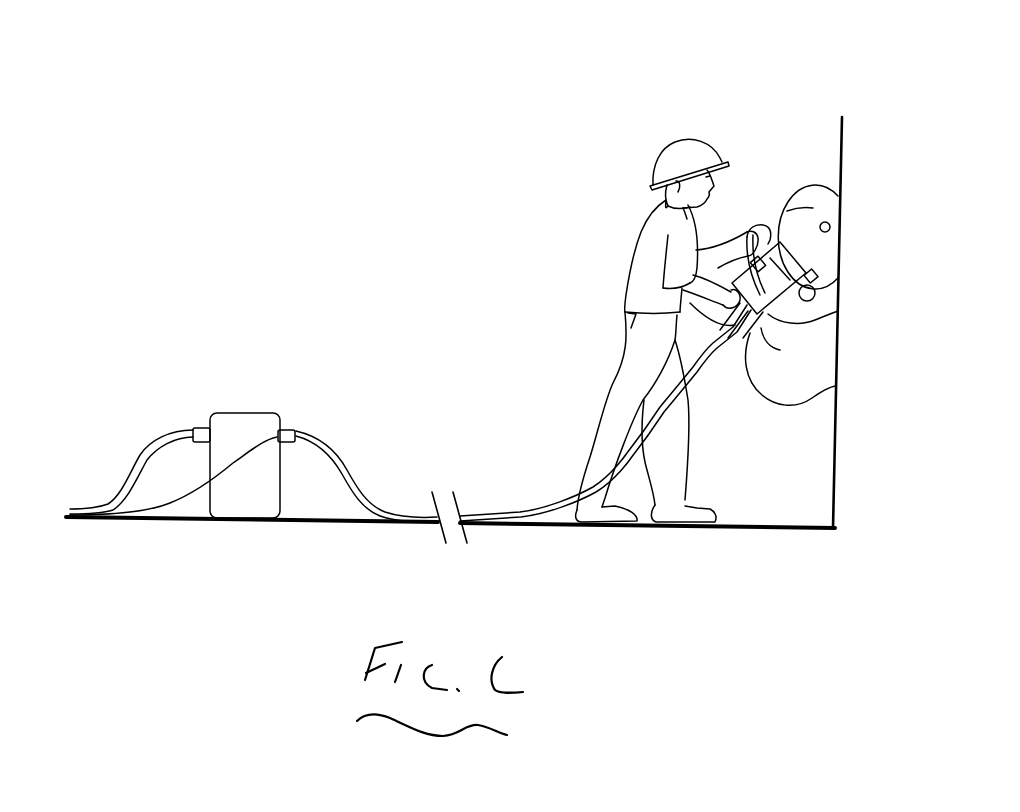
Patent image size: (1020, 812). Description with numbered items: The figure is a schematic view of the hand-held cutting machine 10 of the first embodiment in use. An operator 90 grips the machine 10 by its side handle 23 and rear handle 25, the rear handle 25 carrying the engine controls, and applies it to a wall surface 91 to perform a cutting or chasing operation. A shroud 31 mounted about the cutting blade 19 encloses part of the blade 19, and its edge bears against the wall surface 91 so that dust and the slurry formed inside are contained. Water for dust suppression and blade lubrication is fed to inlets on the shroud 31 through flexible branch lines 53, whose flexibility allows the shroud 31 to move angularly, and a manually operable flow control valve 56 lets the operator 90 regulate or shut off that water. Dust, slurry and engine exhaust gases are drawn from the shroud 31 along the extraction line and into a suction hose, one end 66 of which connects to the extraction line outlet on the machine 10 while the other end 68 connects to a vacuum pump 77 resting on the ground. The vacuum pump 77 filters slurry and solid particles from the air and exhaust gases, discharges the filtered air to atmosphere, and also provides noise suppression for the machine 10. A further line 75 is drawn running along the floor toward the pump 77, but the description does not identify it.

The cutting machine 10 is at (785, 197).
The cutting blade 19 is at (135, 464).
The side handle 23 is at (767, 226).
The rear handle 25 is at (727, 315).
The shroud 31 is at (820, 197).
The branch lines 53 is at (835, 313).
The flow control valve 56 is at (784, 359).
The one end of the suction hose 66 is at (835, 386).
The other end of the suction hose 68 is at (285, 423).
The suction hose 75 is at (363, 500).
The vacuum pump 77 is at (232, 423).
The operator 90 is at (614, 292).
The wall surface 91 is at (833, 408).